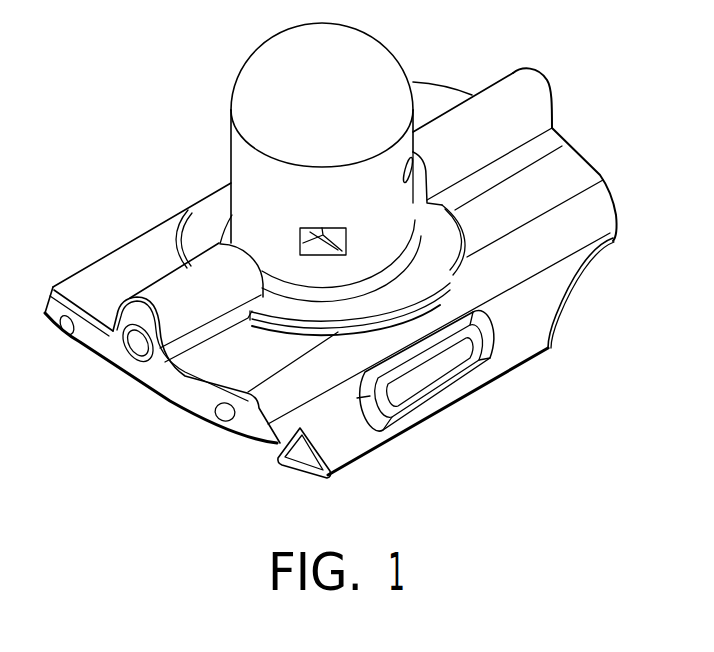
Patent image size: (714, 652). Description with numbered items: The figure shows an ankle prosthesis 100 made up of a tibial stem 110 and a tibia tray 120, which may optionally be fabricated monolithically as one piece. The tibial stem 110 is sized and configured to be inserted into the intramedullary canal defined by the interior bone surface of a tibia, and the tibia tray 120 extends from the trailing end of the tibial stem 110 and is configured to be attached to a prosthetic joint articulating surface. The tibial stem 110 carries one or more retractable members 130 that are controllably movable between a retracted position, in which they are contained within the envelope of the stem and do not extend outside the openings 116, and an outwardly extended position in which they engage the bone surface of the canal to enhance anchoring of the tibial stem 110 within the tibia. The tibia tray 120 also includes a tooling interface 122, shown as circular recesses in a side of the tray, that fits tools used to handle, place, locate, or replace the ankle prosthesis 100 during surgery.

The ankle prosthesis 100 is at (108, 99).
The tibial stem 110 is at (357, 58).
The openings 116 is at (340, 251).
The tibia tray 120 is at (594, 204).
The tooling interface 122 is at (137, 343).
The retractable members 130 is at (302, 241).